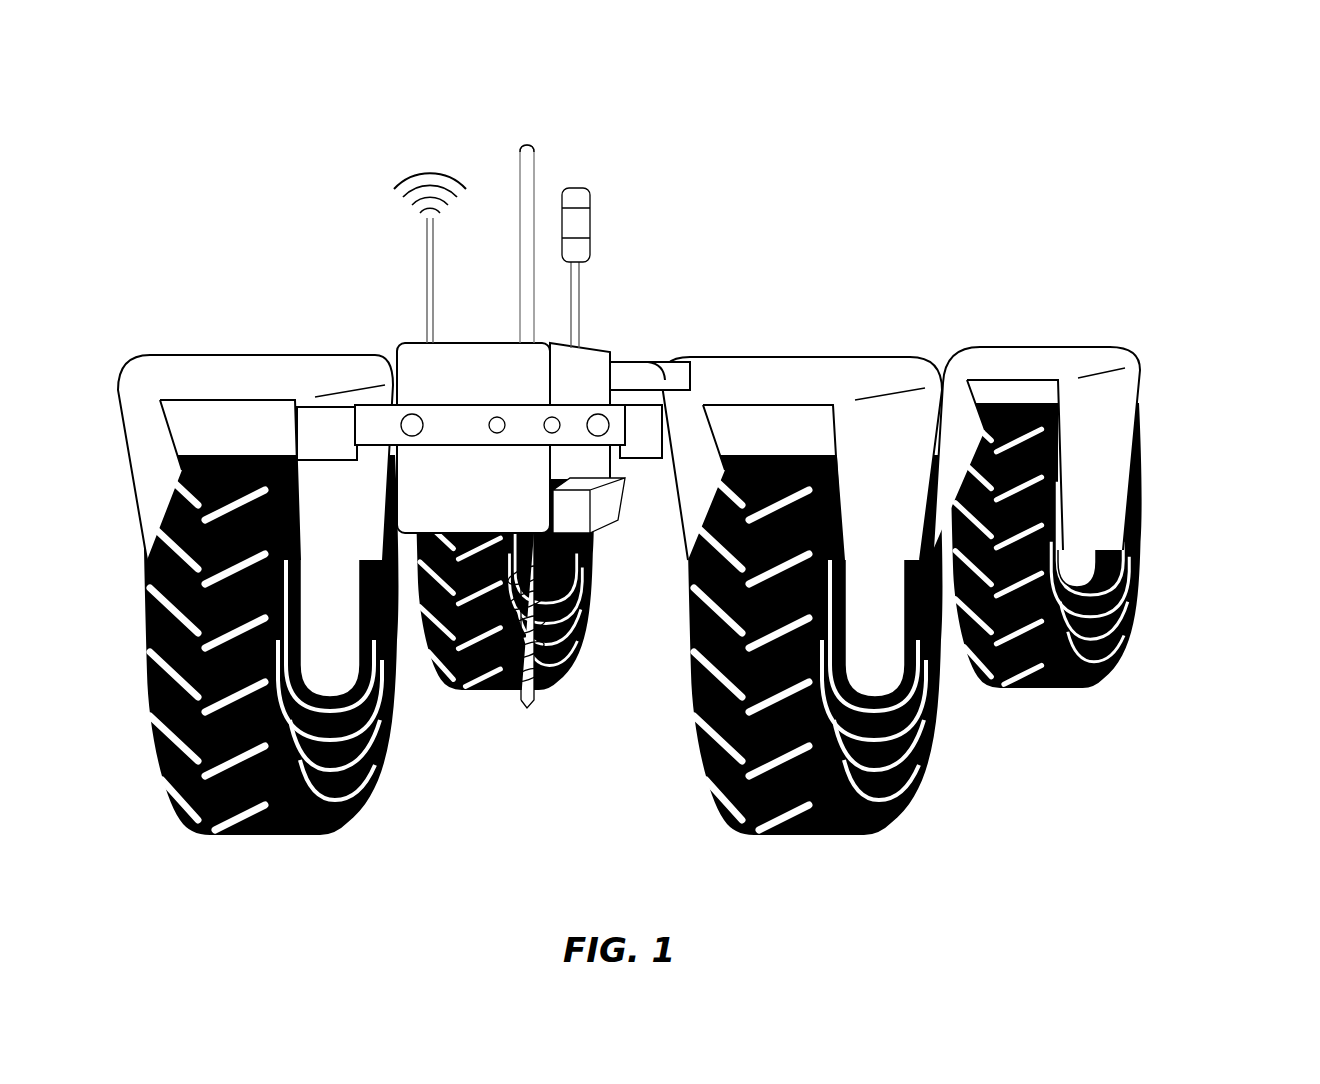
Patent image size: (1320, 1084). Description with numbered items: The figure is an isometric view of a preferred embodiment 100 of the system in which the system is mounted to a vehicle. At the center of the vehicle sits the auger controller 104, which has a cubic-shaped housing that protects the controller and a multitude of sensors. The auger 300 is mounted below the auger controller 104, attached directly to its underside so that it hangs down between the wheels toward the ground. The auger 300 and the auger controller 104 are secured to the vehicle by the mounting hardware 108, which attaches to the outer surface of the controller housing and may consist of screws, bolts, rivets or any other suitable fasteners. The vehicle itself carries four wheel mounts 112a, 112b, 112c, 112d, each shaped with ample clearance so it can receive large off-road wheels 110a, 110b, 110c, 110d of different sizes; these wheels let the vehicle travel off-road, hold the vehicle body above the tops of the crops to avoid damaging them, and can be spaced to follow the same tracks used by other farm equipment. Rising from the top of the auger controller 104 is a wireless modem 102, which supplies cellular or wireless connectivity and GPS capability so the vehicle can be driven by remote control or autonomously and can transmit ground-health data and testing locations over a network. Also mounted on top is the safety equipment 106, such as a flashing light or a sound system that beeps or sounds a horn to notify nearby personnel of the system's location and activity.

The preferred embodiment of the system 100 is at (1228, 100).
The wireless modem 102 is at (394, 203).
The auger controller 104 is at (398, 345).
The safety equipment 106 is at (573, 192).
The mounting hardware 108 is at (582, 408).
The wheel 110a is at (368, 795).
The wheel 110b is at (458, 675).
The wheel 110c is at (925, 775).
The wheel 110d is at (1065, 688).
The wheel mount 112a is at (160, 356).
The wheel mount 112b is at (642, 362).
The wheel mount 112c is at (762, 367).
The wheel mount 112d is at (1050, 350).
The auger 300 is at (555, 672).